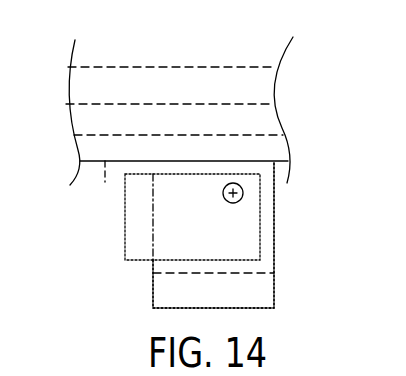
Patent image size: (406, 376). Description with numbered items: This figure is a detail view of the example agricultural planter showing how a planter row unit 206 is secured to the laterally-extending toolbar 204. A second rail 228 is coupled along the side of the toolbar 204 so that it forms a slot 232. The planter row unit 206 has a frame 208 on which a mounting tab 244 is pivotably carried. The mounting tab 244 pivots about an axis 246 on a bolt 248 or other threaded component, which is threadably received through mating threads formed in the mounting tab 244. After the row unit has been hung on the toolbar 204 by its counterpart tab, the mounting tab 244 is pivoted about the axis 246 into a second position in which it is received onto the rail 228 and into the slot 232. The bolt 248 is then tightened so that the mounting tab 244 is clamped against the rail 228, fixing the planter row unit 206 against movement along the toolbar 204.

The toolbar 204 is at (168, 54).
The slot 232 is at (88, 117).
The second rail 228 is at (245, 107).
The mounting tab 244 is at (125, 228).
The bolt 248 is at (245, 194).
The axis 246 is at (235, 196).
The planter row unit 206 is at (274, 298).
The frame 208 is at (274, 298).